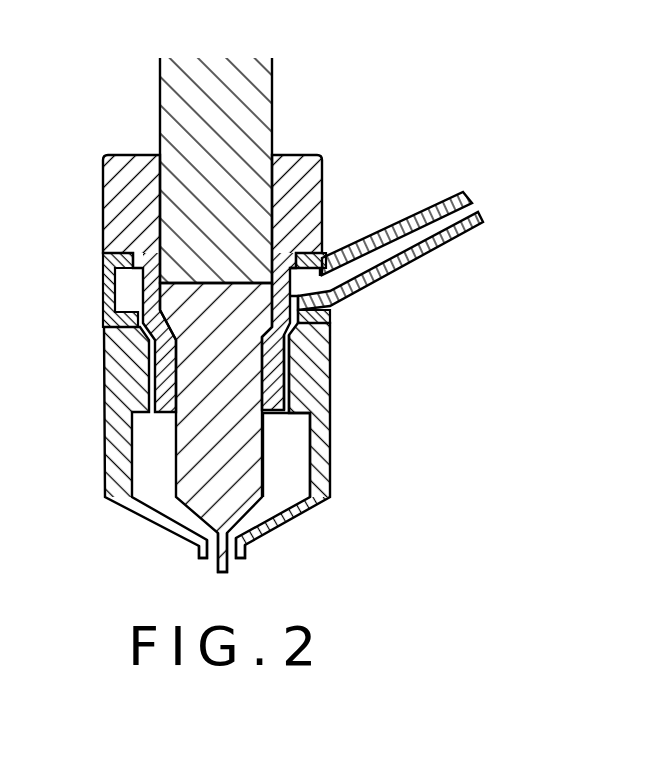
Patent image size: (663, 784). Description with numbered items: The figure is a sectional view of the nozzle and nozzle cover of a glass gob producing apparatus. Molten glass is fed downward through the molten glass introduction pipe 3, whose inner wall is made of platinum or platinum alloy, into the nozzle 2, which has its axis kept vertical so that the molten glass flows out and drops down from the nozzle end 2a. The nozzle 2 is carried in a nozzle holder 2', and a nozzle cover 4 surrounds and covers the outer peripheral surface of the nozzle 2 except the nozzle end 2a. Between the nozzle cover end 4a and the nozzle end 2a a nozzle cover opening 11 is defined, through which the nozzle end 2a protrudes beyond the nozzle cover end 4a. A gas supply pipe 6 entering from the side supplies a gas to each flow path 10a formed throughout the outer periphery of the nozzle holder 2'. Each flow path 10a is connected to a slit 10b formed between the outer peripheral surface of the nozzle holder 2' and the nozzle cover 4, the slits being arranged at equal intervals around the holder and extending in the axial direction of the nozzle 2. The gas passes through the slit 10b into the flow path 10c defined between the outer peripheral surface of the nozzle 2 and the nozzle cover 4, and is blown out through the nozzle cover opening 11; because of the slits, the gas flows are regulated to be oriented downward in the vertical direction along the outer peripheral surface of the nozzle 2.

The nozzle 2 is at (161, 427).
The nozzle holder 2' is at (241, 281).
The nozzle end 2a is at (218, 572).
The molten glass introduction pipe 3 is at (160, 103).
The nozzle cover 4 is at (331, 479).
The nozzle cover end 4a is at (199, 548).
The gas supply pipe 6 is at (406, 226).
The flow path 10a is at (306, 287).
The slit 10b is at (285, 384).
The flow path 10c is at (297, 441).
The nozzle cover opening 11 is at (232, 558).